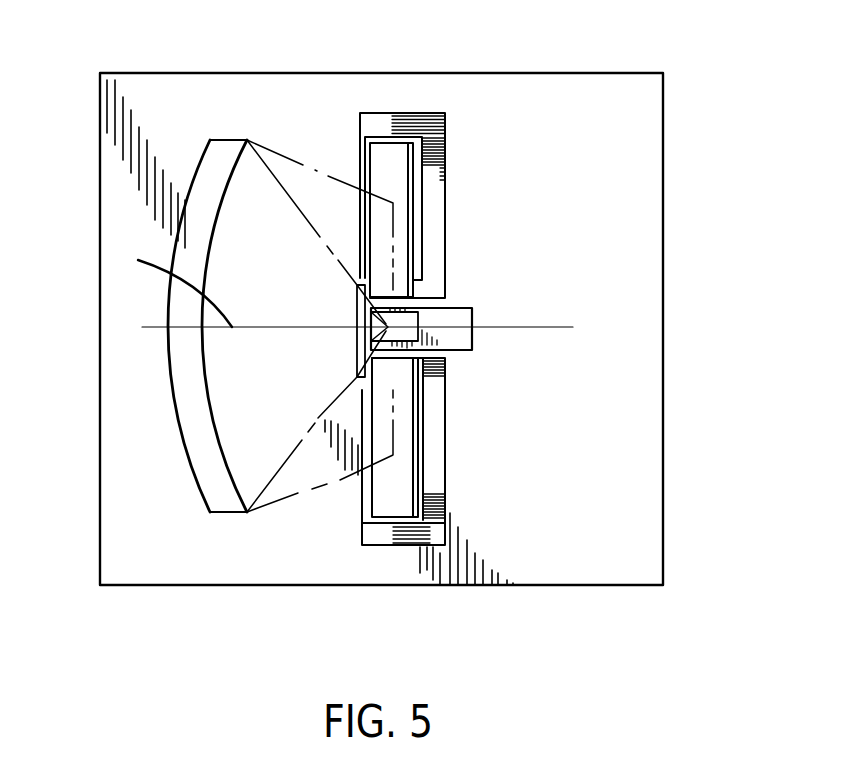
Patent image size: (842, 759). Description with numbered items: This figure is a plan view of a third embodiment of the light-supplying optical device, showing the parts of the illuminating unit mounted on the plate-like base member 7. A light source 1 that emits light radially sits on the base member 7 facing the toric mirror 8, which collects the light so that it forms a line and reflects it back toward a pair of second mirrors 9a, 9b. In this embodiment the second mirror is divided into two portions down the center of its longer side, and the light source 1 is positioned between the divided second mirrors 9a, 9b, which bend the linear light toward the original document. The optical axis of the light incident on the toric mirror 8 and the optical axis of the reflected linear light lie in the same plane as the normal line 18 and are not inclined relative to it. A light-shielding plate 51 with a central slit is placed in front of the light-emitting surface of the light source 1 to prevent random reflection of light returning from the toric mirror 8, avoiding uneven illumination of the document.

The light source 1 is at (465, 318).
The base member 7 is at (650, 503).
The toric mirror 8 is at (187, 420).
The second mirror 9a is at (403, 160).
The second mirror 9b is at (392, 507).
The normal line 18 is at (128, 257).
The light-shielding plate 51 is at (357, 343).